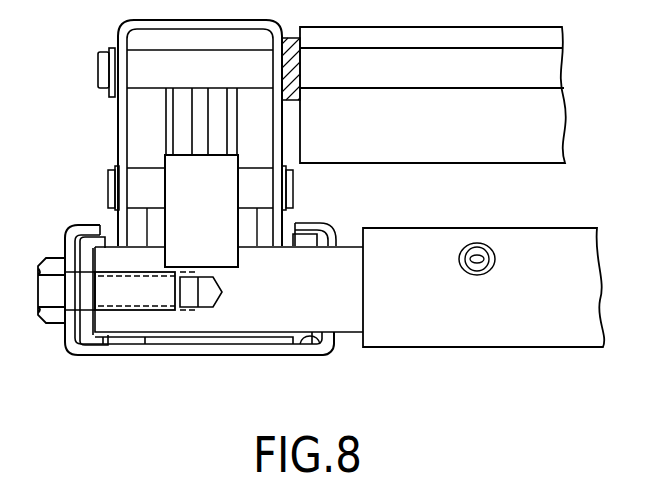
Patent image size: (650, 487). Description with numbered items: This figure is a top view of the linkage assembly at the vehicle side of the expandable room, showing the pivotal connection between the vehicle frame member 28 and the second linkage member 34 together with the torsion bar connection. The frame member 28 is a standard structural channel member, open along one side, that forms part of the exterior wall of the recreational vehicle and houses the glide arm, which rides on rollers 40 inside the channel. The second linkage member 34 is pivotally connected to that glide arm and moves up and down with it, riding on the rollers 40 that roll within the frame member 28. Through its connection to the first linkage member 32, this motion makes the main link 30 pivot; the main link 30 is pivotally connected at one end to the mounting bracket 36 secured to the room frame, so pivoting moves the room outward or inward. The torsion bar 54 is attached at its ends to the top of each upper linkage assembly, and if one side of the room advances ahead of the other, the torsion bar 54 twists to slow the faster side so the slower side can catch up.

The frame member 28 is at (188, 348).
The main link 30 is at (287, 220).
The first linkage member 32 is at (165, 117).
The second linkage member 34 is at (200, 137).
The mounting bracket 36 is at (444, 132).
The rollers 40 is at (93, 350).
The torsion bar 54 is at (423, 335).